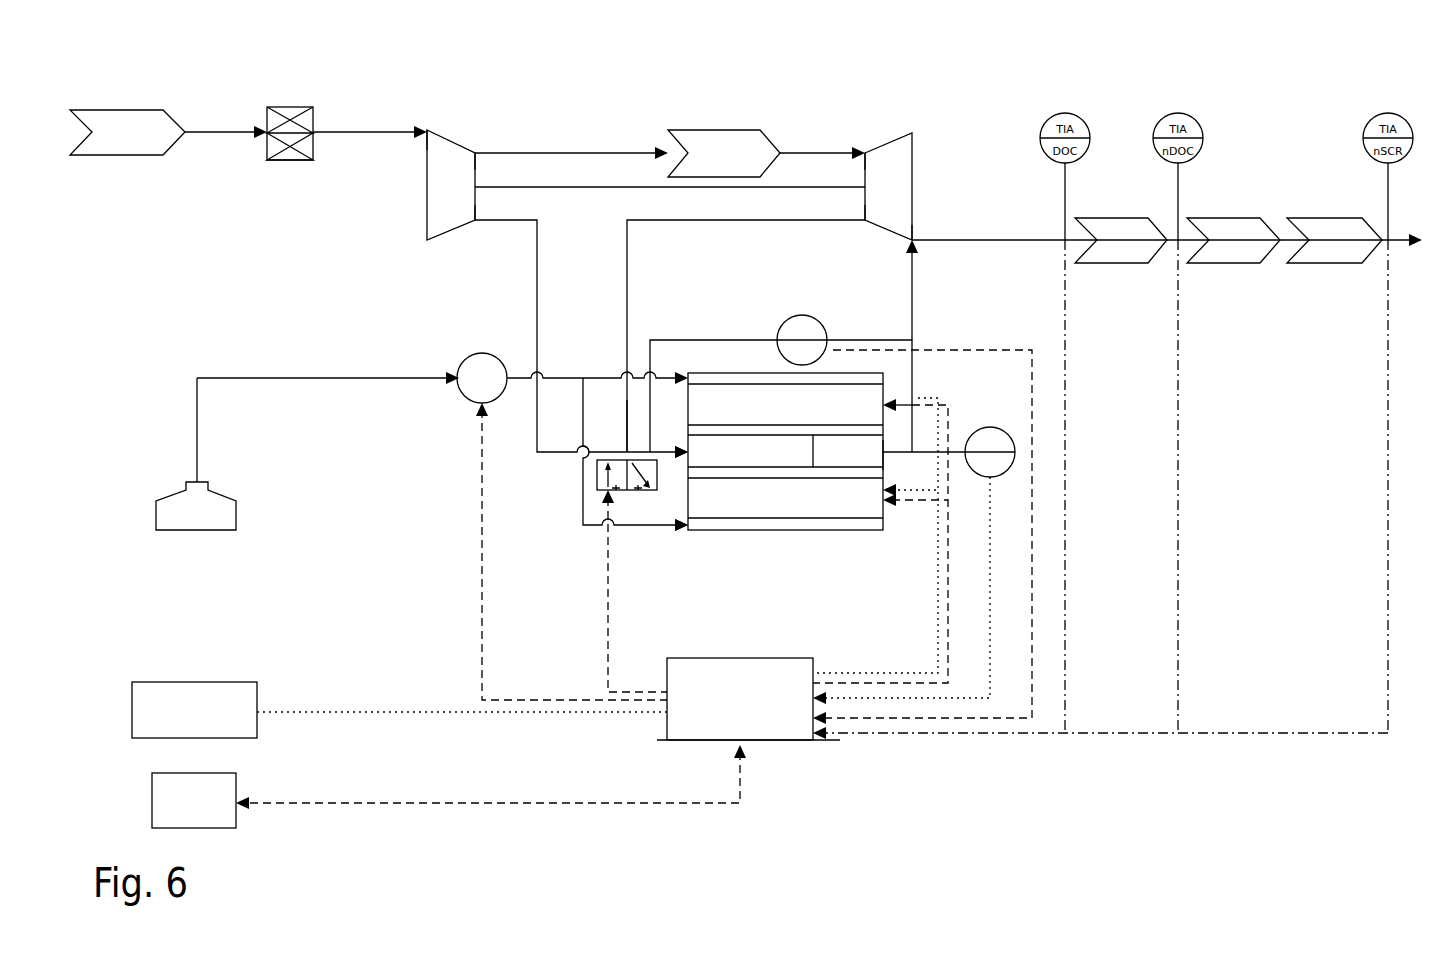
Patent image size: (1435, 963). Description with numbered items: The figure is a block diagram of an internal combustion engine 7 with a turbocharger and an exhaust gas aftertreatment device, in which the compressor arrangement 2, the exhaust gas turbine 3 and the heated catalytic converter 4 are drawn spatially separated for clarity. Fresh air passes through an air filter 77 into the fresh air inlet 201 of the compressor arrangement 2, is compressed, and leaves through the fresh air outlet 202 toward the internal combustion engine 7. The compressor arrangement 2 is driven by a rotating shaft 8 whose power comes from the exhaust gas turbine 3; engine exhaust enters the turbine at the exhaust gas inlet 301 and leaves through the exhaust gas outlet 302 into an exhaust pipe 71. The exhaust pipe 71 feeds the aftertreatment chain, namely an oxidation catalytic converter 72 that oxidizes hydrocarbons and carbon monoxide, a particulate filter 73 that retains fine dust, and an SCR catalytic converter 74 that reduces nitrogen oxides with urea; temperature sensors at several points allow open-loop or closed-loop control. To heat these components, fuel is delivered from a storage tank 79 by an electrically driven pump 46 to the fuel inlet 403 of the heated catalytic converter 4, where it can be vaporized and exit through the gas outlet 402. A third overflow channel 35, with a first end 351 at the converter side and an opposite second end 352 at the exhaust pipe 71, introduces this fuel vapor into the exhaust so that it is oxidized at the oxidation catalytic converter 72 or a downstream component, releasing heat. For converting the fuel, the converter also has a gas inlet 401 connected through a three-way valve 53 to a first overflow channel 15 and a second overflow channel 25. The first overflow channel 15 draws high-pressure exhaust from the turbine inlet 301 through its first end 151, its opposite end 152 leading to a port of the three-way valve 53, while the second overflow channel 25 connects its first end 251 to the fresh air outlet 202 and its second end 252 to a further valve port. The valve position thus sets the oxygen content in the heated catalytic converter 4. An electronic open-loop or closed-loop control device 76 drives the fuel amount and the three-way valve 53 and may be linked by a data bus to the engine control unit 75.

The compressor arrangement 2 is at (448, 133).
The fresh air inlet 201 is at (427, 130).
The fresh air outlet 202 is at (476, 152).
The first end 251 is at (472, 225).
The second overflow channel 25 is at (537, 315).
The second end 252 is at (610, 454).
The exhaust gas turbine 3 is at (907, 132).
The exhaust gas inlet 301 is at (866, 155).
The exhaust gas outlet 302 is at (917, 236).
The first end 151 is at (866, 222).
The first overflow channel 15 is at (627, 258).
The line branch 152 is at (625, 452).
The third overflow channel 35 is at (912, 342).
The first end 351 is at (905, 455).
The second end 352 is at (912, 258).
The heated catalytic converter 4 is at (780, 520).
The gas inlet 401 is at (690, 455).
The gas outlet 402 is at (886, 456).
The fuel inlet 403 is at (683, 527).
The electrically driven pump 46 is at (470, 398).
The three-way valve 53 is at (610, 487).
The internal combustion engine 7 is at (722, 150).
The rotating shaft 8 is at (590, 153).
The exhaust pipe 71 is at (1012, 240).
The oxidation catalytic converter 72 is at (1125, 218).
The particulate filter 73 is at (1238, 218).
The SCR catalytic converter 74 is at (1335, 218).
The engine control unit 75 is at (162, 806).
The electronic open-loop or closed-loop control device 76 is at (780, 727).
The air filter 77 is at (296, 97).
The storage tank 79 is at (160, 511).